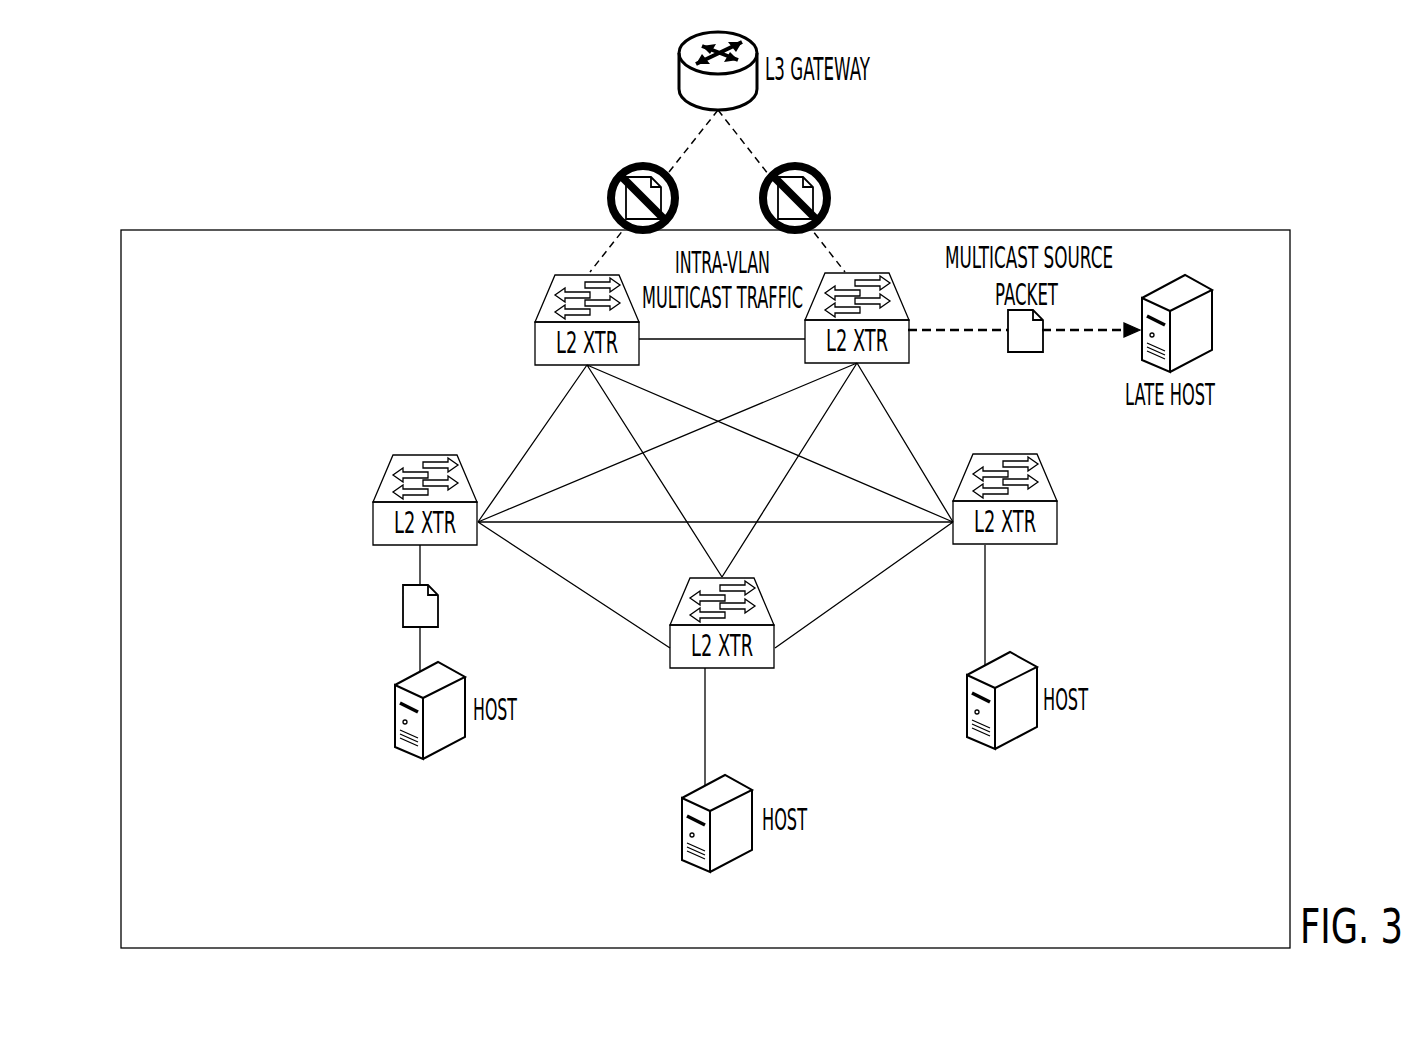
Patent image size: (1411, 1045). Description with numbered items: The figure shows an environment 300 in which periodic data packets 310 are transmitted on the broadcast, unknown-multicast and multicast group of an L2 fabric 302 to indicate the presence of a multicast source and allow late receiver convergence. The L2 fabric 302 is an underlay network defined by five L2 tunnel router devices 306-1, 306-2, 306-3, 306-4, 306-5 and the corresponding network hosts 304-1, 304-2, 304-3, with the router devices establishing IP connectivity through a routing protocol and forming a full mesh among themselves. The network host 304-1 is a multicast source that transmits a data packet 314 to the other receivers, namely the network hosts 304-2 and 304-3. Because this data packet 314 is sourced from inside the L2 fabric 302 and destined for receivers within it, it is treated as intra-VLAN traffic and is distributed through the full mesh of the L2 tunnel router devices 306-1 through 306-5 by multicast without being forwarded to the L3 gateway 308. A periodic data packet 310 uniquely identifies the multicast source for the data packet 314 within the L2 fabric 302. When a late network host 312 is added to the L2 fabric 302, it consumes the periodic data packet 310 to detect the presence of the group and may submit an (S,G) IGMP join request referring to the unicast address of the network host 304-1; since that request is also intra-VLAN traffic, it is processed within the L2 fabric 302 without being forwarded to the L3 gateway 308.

The environment 300 is at (131, 128).
The L2 fabric 302 is at (312, 932).
The network host 304-1 is at (395, 722).
The network host 304-2 is at (682, 823).
The network host 304-3 is at (967, 712).
The L2 tunnel router device 306-1 is at (373, 520).
The L2 tunnel router device 306-2 is at (670, 657).
The L2 tunnel router device 306-3 is at (1058, 523).
The L2 tunnel router device 306-4 is at (535, 338).
The L2 tunnel router device 306-5 is at (910, 358).
The L3 gateway 308 is at (680, 78).
The periodic data packet 310 is at (1025, 352).
The late network host 312 is at (1212, 327).
The data packet 314 is at (403, 607).